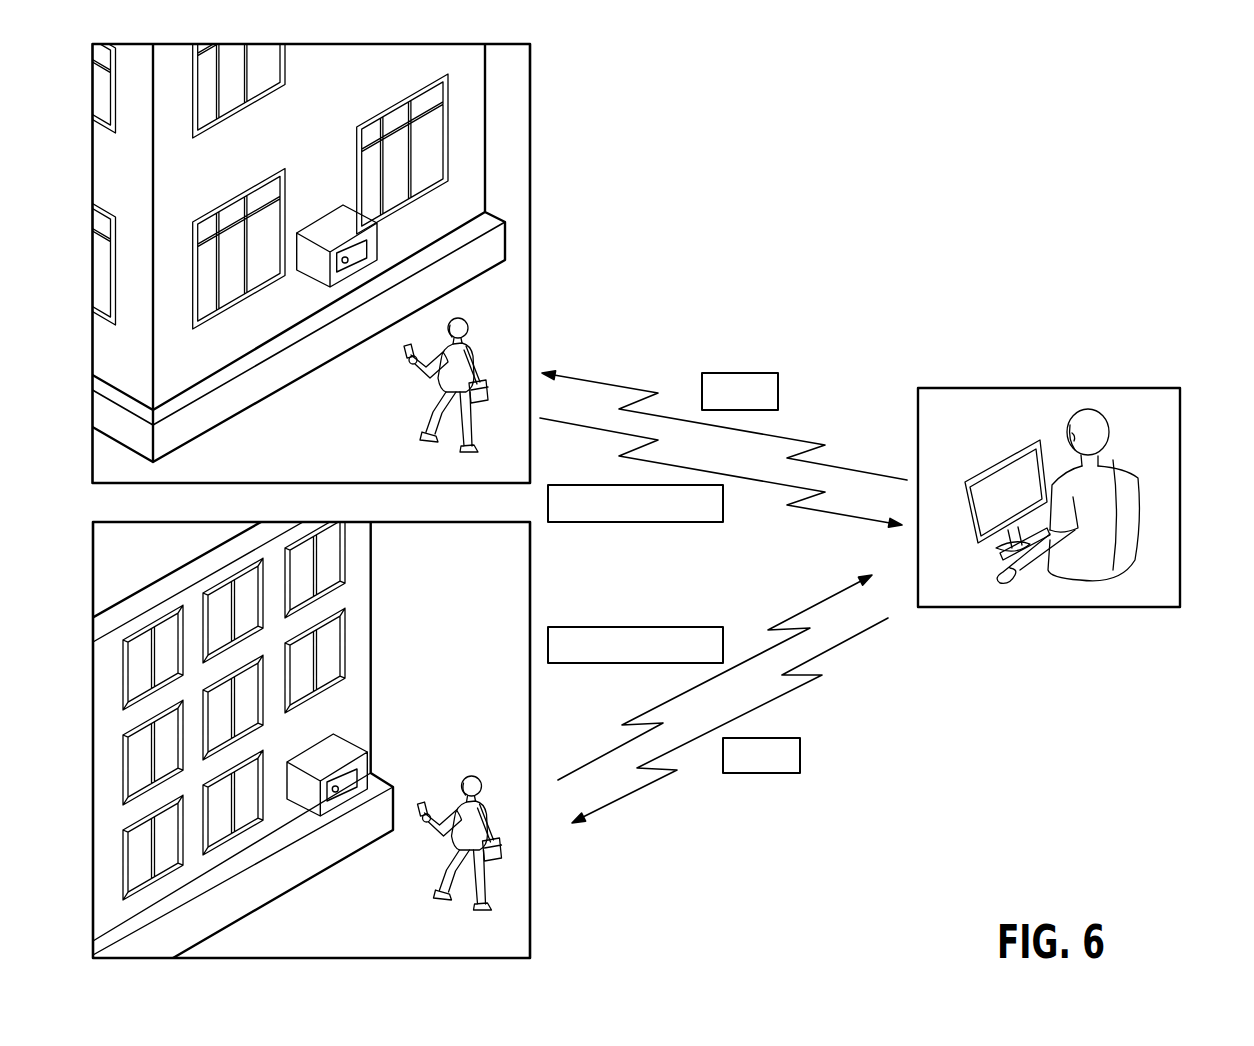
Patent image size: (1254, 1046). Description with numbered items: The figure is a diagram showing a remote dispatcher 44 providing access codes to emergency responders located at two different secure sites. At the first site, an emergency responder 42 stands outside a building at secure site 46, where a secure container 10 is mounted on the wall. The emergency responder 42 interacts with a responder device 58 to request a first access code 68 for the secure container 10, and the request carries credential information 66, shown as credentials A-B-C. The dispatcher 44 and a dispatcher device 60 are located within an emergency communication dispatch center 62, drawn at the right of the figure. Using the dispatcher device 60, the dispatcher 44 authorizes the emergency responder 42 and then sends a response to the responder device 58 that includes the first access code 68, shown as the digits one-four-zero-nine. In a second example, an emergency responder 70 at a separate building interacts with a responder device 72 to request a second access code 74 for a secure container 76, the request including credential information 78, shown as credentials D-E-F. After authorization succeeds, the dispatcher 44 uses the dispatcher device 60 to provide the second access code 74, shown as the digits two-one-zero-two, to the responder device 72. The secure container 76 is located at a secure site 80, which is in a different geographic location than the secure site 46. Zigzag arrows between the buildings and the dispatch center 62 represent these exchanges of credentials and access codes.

The secure container 10 is at (338, 218).
The emergency responder 42 is at (437, 398).
The remote dispatcher 44 is at (1113, 458).
The secure site 46 is at (485, 101).
The responder device 58 is at (405, 349).
The dispatcher device 60 is at (980, 474).
The emergency communication dispatch center 62 is at (1170, 388).
The credential information 66 is at (710, 522).
The first access code 68 is at (770, 373).
The emergency responder 70 is at (452, 865).
The responder device 72 is at (418, 802).
The second access code 74 is at (783, 773).
The secure container 76 is at (350, 755).
The credential information 78 is at (595, 627).
The secure site 80 is at (372, 595).